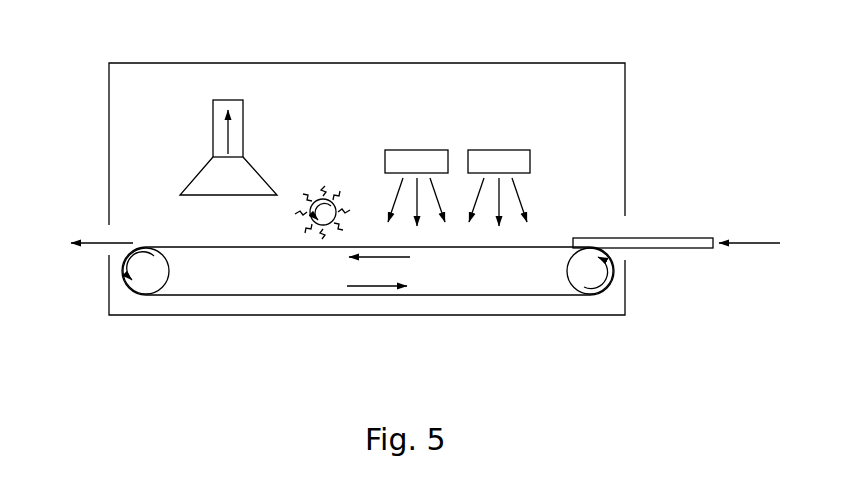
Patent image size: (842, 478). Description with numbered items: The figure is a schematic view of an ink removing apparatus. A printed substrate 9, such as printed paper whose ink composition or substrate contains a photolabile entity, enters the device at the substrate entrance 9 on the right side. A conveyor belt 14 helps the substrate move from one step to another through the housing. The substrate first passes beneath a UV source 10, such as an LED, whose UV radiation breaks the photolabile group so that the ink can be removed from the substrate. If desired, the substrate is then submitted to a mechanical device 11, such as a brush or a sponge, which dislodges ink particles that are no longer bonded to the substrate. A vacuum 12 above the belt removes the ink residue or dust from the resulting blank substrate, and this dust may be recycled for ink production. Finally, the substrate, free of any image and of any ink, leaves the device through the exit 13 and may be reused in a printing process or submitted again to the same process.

The printed substrate / substrate entrance 9 is at (655, 226).
The UV source 10 is at (428, 140).
The mechanical device 11 is at (326, 172).
The vacuum 12 is at (209, 92).
The exit 13 is at (95, 233).
The conveyor belt 14 is at (557, 297).